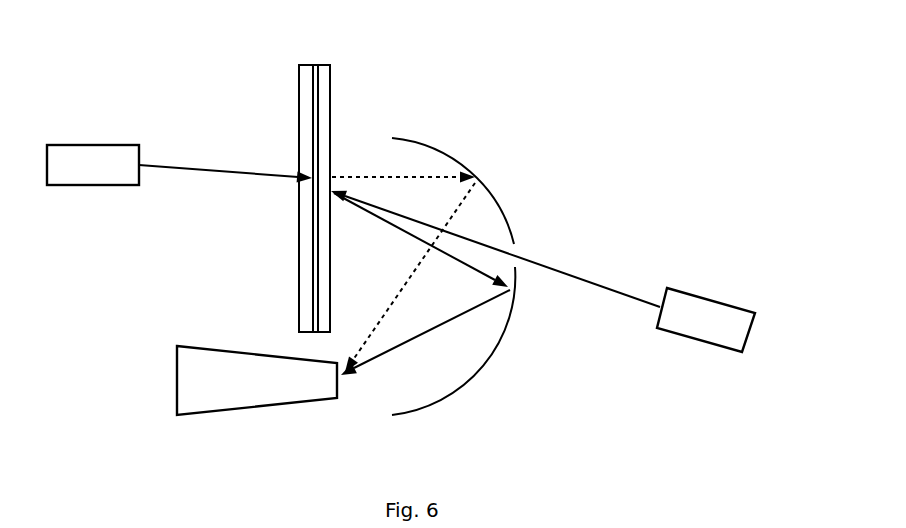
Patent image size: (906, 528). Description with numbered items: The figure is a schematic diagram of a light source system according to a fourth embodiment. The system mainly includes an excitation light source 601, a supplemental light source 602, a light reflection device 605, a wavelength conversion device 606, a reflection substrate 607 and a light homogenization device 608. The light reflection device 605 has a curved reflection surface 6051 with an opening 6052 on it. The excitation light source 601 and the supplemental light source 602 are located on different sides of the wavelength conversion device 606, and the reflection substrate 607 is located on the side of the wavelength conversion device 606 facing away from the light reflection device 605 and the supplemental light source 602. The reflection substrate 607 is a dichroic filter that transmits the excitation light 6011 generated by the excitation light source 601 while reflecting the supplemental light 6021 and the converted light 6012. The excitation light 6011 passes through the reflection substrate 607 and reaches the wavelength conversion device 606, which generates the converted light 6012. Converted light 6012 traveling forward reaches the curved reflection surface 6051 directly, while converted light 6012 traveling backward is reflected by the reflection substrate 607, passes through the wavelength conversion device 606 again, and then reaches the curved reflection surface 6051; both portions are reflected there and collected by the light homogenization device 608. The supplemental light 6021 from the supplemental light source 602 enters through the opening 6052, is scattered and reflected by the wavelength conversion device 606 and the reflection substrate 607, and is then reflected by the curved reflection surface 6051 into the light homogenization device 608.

The excitation light source 601 is at (100, 150).
The excitation light 6011 is at (157, 165).
The converted light 6012 is at (385, 308).
The supplemental light source 602 is at (693, 293).
The supplemental light 6021 is at (588, 270).
The light reflection device 605 is at (481, 247).
The curved reflection surface 6051 is at (453, 157).
The opening 6052 is at (513, 262).
The wavelength conversion device 606 is at (322, 75).
The reflection substrate 607 is at (308, 75).
The light homogenization device 608 is at (232, 388).